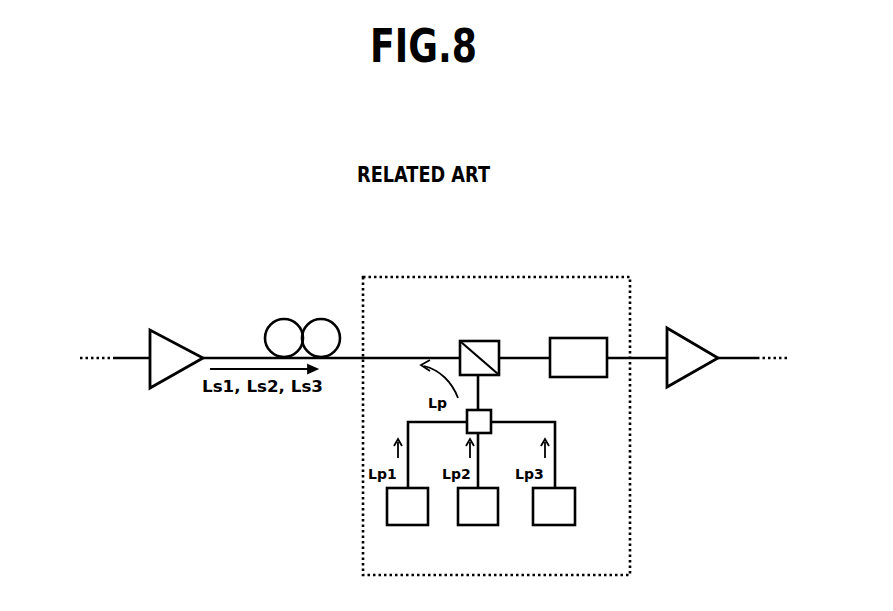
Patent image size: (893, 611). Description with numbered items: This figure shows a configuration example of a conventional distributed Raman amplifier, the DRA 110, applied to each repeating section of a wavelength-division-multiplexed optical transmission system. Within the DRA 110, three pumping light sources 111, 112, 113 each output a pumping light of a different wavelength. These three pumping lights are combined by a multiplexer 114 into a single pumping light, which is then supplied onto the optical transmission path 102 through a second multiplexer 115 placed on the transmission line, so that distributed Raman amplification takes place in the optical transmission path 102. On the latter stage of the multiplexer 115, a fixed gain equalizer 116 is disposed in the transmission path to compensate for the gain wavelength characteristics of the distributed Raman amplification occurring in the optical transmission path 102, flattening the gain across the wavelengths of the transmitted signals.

The optical transmission path 102 is at (300, 318).
The DRA 110 is at (496, 416).
The pumping light source 111 is at (408, 527).
The pumping light source 112 is at (483, 527).
The pumping light source 113 is at (558, 527).
The multiplexer 114 is at (493, 412).
The multiplexer 115 is at (478, 341).
The fixed gain equalizer (GEQ) 116 is at (577, 338).